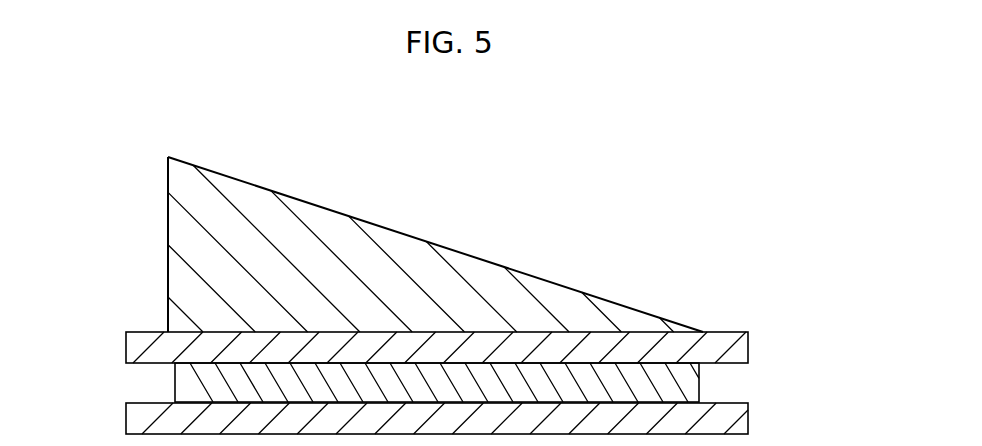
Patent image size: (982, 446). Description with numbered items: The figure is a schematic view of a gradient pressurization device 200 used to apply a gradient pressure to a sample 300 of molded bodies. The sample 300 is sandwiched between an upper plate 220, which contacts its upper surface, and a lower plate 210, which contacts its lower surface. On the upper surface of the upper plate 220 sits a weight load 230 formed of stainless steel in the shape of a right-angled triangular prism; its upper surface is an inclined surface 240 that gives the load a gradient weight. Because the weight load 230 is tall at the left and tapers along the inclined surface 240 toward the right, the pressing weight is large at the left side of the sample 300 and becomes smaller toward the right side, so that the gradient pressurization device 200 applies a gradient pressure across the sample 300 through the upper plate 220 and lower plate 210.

The gradient pressurization device 200 is at (372, 237).
The lower plate 210 is at (737, 418).
The upper plate 220 is at (737, 348).
The weight load 230 is at (168, 256).
The inclined surface 240 is at (402, 230).
The sample 300 is at (687, 383).